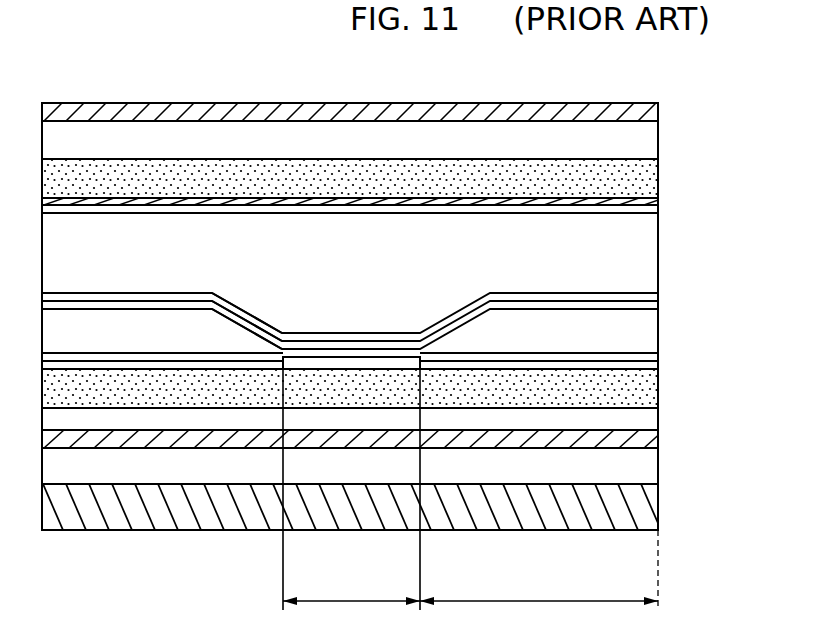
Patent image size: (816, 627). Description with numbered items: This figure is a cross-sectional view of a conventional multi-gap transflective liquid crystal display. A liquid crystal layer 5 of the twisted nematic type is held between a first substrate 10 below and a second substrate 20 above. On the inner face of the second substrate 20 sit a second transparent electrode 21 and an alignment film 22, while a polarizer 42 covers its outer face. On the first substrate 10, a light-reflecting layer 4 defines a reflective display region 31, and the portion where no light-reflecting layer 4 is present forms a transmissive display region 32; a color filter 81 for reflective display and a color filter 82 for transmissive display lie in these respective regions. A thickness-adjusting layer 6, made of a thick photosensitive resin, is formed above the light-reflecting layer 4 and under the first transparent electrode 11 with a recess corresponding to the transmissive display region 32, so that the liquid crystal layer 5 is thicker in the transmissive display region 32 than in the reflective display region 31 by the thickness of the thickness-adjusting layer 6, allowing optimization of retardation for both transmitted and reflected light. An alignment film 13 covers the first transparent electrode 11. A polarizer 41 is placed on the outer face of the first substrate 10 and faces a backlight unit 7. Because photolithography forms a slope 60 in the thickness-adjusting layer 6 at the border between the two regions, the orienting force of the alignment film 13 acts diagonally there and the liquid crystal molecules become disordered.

The polarizer 42 is at (658, 113).
The second substrate 20 is at (658, 171).
The second transparent electrode 21 is at (658, 201).
The alignment film 22 is at (658, 214).
The liquid crystal layer 5 is at (650, 252).
The alignment film 13 is at (658, 283).
The first transparent electrode 11 is at (658, 310).
The slope 60 is at (250, 315).
The thickness-adjusting layer 6 is at (658, 330).
The color filter for reflective display 81 is at (658, 357).
The color filter for transmissive display 82 is at (343, 356).
The light-reflecting layer 4 is at (658, 370).
The first substrate 10 is at (655, 401).
The polarizer 41 is at (655, 440).
The backlight unit 7 is at (655, 508).
The transmissive display region 32 is at (351, 585).
The reflective display region 31 is at (539, 585).